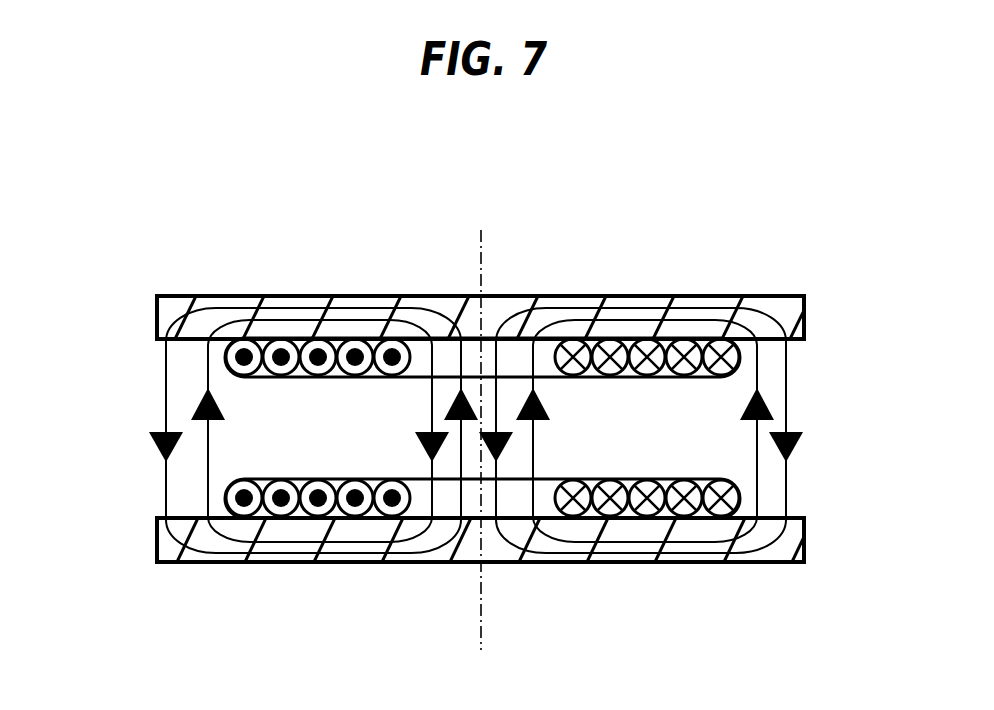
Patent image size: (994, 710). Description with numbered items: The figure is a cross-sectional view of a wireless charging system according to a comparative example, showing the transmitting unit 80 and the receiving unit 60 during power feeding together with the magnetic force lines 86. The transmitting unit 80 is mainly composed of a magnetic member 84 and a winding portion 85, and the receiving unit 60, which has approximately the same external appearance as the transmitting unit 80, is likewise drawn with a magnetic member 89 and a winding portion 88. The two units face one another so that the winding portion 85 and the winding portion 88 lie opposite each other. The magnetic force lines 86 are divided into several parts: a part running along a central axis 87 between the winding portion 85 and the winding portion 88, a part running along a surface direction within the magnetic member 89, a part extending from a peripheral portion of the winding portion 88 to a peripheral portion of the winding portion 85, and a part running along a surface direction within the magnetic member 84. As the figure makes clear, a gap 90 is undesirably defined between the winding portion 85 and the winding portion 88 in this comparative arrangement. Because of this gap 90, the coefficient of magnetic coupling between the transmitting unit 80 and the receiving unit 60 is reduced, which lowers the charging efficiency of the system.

The receiving unit 60 is at (825, 285).
The transmitting unit 80 is at (825, 480).
The gap 90 is at (825, 385).
The magnetic member 84 is at (502, 562).
The winding portion 85 is at (340, 477).
The magnetic force lines 86 is at (166, 410).
The central axis 87 is at (480, 263).
The winding portion 88 is at (602, 378).
The magnetic member 89 is at (225, 296).